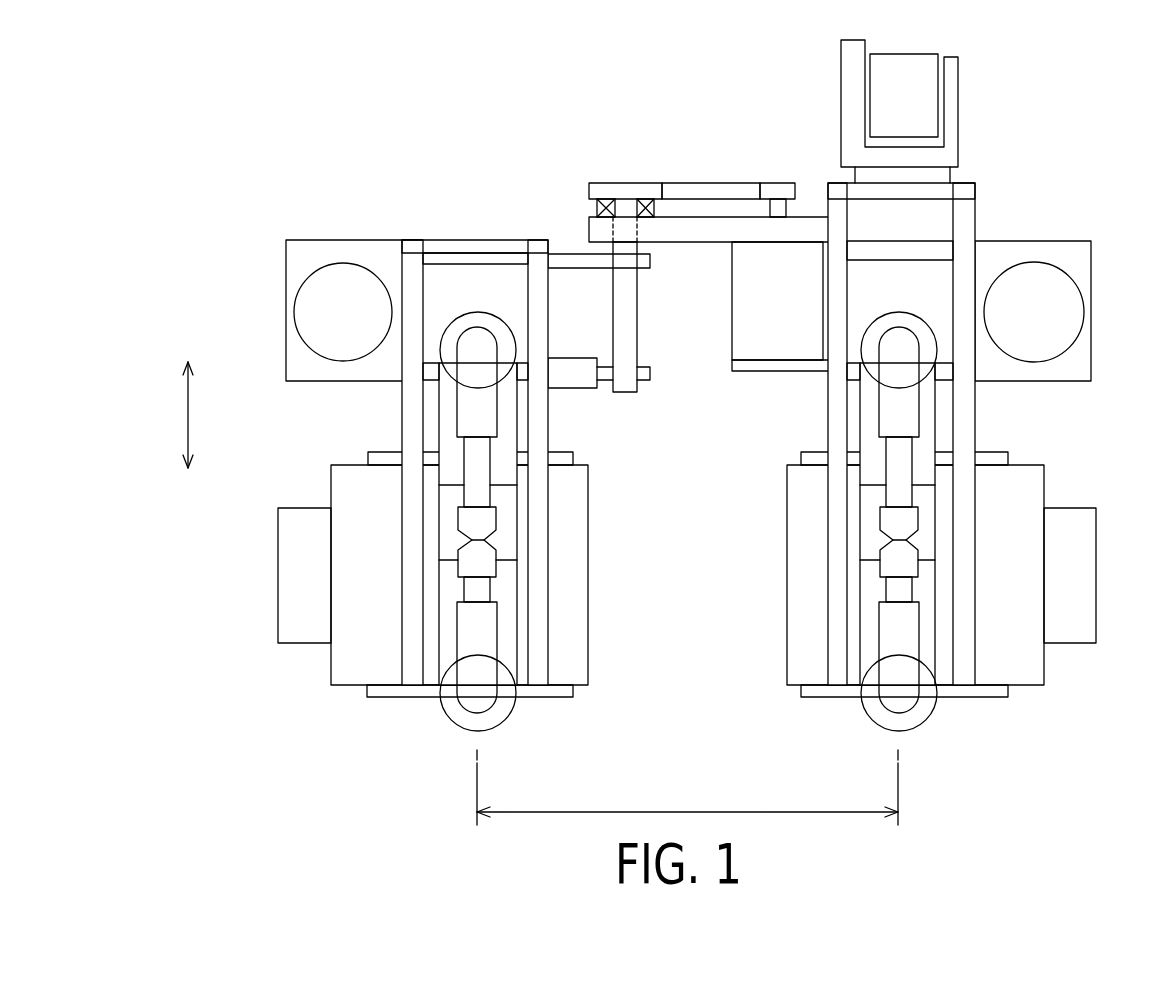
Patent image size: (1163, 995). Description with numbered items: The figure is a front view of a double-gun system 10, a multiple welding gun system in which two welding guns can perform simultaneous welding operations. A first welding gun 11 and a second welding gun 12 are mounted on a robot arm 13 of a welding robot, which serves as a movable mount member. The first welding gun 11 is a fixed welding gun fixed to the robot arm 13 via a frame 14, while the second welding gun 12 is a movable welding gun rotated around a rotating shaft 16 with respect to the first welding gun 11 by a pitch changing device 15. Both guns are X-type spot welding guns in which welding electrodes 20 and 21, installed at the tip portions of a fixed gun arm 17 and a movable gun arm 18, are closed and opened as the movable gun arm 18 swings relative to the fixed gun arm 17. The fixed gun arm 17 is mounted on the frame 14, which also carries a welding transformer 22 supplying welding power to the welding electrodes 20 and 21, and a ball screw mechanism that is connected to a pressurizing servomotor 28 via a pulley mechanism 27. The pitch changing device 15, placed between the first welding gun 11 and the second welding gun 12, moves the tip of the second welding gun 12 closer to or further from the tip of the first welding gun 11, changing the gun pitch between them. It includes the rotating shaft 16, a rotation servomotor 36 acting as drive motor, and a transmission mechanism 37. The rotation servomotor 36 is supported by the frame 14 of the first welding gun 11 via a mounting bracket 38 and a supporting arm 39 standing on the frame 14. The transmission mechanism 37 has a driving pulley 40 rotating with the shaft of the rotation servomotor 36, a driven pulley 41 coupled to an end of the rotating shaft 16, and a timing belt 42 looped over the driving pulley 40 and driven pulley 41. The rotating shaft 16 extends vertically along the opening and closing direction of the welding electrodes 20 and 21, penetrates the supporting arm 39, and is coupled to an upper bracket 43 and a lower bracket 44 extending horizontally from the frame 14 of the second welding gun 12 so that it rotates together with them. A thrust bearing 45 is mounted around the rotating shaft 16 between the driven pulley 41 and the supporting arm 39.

The double-gun system 10 is at (343, 121).
The first welding gun 11 is at (1068, 234).
The second welding gun 12 is at (297, 229).
The robot arm 13 is at (958, 100).
The frame 14 is at (548, 605).
The pitch changing device 15 is at (617, 108).
The rotating shaft 16 is at (637, 352).
The fixed gun arm 17 is at (462, 623).
The movable gun arm 18 is at (455, 407).
The welding electrode 20 is at (458, 548).
The welding electrode 21 is at (458, 518).
The welding transformer 22 is at (588, 655).
The pulley mechanism 27 is at (286, 277).
The pressurizing servomotor 28 is at (319, 318).
The rotation servomotor 36 is at (747, 327).
The transmission mechanism 37 is at (755, 98).
The mounting bracket 38 is at (752, 371).
The supporting arm 39 is at (690, 247).
The driving pulley 40 is at (776, 183).
The driven pulley 41 is at (622, 183).
The timing belt 42 is at (688, 183).
The upper bracket 43 is at (558, 238).
The lower bracket 44 is at (602, 388).
The thrust bearing 45 is at (597, 205).